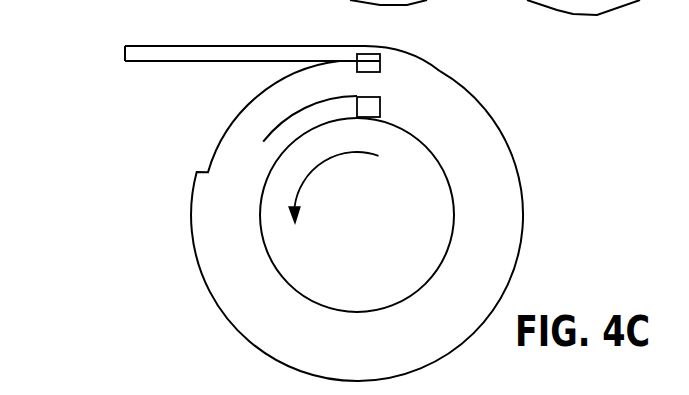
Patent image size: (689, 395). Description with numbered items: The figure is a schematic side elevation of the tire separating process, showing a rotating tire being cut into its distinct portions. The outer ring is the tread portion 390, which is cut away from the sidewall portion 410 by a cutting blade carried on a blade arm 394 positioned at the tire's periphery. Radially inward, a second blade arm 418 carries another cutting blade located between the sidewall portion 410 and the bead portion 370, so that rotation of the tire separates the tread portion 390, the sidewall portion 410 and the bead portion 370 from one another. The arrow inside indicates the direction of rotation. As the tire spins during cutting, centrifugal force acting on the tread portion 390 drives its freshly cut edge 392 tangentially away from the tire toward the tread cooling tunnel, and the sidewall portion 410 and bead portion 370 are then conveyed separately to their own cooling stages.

The bead portion 370 is at (283, 133).
The tread portion 390 is at (186, 52).
The edge 392 is at (125, 50).
The blade arm 394 is at (382, 62).
The sidewall portion 410 is at (258, 141).
The second blade arm 418 is at (382, 104).